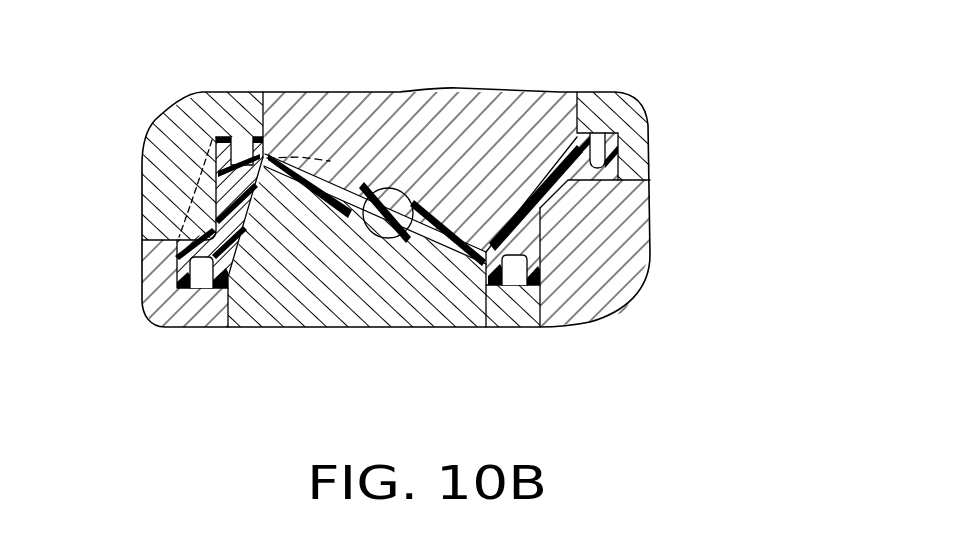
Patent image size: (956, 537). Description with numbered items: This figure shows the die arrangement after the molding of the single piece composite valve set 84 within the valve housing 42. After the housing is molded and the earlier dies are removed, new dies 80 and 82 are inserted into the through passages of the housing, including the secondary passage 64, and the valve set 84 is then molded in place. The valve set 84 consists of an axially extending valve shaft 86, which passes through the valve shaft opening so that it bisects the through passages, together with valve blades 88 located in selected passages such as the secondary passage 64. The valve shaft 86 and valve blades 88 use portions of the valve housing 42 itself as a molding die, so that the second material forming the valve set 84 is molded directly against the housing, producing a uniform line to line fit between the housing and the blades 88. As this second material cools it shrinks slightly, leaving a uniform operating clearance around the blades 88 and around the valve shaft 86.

The valve housing 42 is at (213, 192).
The secondary passage 64 is at (566, 138).
The die 80 is at (508, 121).
The die 82 is at (362, 287).
The single piece composite valve set 84 is at (368, 172).
The valve shaft 86 is at (330, 161).
The valve blade 88 is at (322, 165).